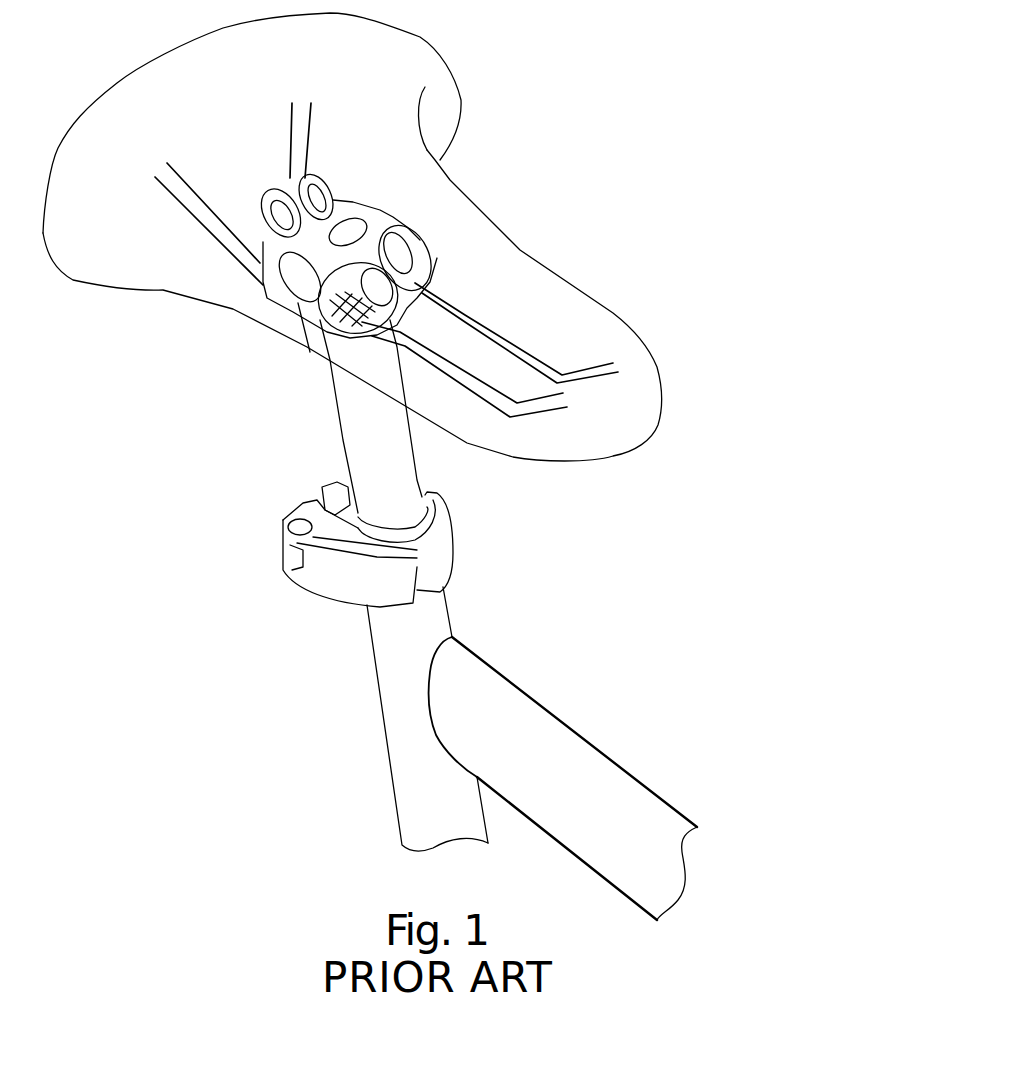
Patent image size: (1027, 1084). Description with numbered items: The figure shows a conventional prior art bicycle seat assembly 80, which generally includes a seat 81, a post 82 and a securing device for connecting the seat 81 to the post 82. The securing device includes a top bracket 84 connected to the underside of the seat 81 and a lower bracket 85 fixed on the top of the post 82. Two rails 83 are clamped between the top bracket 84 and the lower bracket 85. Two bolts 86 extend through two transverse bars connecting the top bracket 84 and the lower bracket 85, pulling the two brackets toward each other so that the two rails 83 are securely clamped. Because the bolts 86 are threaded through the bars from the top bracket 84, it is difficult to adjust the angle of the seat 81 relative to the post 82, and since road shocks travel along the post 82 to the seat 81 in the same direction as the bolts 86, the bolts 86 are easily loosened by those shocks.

The bicycle seat assembly 80 is at (555, 107).
The seat 81 is at (533, 280).
The post 82 is at (350, 423).
The rails 83 is at (227, 242).
The top bracket 84 is at (353, 213).
The lower bracket 85 is at (297, 303).
The bolts 86 is at (288, 177).